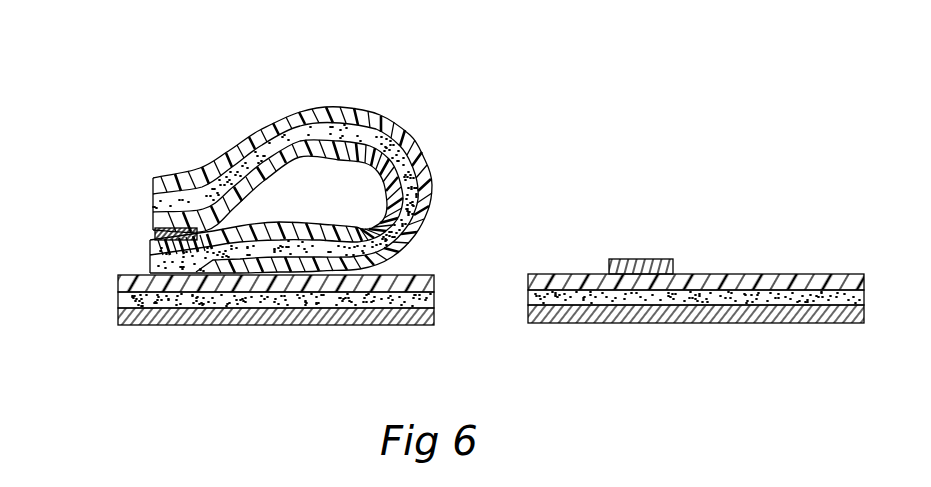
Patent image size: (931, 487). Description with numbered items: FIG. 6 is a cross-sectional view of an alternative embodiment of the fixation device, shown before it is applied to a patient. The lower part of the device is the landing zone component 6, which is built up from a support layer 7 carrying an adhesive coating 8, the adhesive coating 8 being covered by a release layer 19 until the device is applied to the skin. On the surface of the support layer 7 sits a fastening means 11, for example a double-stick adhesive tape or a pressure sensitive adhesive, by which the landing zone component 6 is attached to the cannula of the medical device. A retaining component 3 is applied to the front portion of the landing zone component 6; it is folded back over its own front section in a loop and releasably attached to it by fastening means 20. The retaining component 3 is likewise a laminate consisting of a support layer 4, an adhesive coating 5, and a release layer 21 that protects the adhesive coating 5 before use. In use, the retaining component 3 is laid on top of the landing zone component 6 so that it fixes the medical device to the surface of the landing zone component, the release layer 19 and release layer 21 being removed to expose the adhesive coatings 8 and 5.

The retaining component 3 is at (150, 228).
The support layer 4 is at (148, 243).
The adhesive coating 5 is at (150, 268).
The landing zone component 6 is at (840, 272).
The support layer 7 is at (118, 278).
The adhesive coating 8 is at (118, 296).
The fastening means 11 is at (667, 258).
The release layer 19 is at (567, 312).
The fastening means 20 is at (153, 236).
The release layer 21 is at (397, 137).